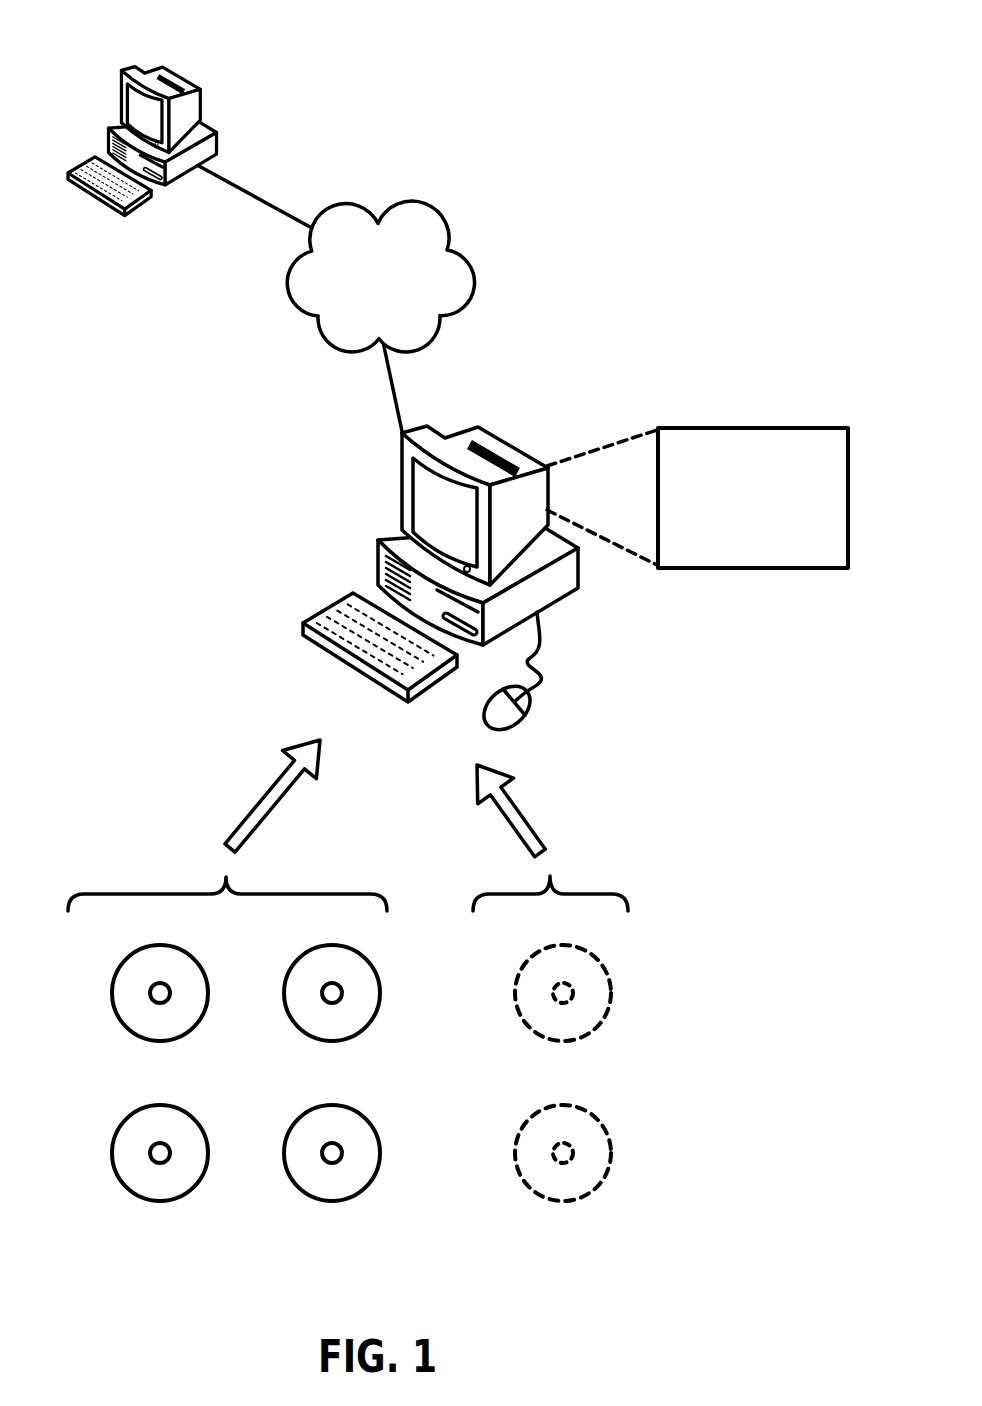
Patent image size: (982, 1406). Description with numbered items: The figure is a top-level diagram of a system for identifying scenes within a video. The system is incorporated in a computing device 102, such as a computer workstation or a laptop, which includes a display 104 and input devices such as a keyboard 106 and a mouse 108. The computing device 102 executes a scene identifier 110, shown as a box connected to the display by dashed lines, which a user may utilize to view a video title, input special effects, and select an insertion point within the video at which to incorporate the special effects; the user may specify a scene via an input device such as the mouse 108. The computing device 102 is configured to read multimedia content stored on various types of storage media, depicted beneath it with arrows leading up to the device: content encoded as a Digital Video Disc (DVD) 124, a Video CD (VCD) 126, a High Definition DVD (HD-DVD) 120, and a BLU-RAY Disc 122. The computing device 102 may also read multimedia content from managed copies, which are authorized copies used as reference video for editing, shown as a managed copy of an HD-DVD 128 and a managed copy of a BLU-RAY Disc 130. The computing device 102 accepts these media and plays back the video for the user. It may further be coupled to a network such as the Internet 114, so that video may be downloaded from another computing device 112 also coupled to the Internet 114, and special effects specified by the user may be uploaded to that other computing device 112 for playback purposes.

The computing device 102 is at (512, 392).
The display 104 is at (401, 508).
The keyboard 106 is at (366, 677).
The mouse 108 is at (483, 722).
The scene identifier 110 is at (745, 428).
The another computing device 112 is at (205, 42).
The Internet 114 is at (366, 302).
The High Definition DVD (HD-DVD) 120 is at (131, 956).
The BLU-RAY Disc 122 is at (131, 1116).
The Digital Video Disc (DVD) 124 is at (303, 956).
The Video CD (VCD) 126 is at (303, 1116).
The managed copy of an HD-DVD 128 is at (534, 956).
The managed copy of a BLU-RAY Disc 130 is at (534, 1116).